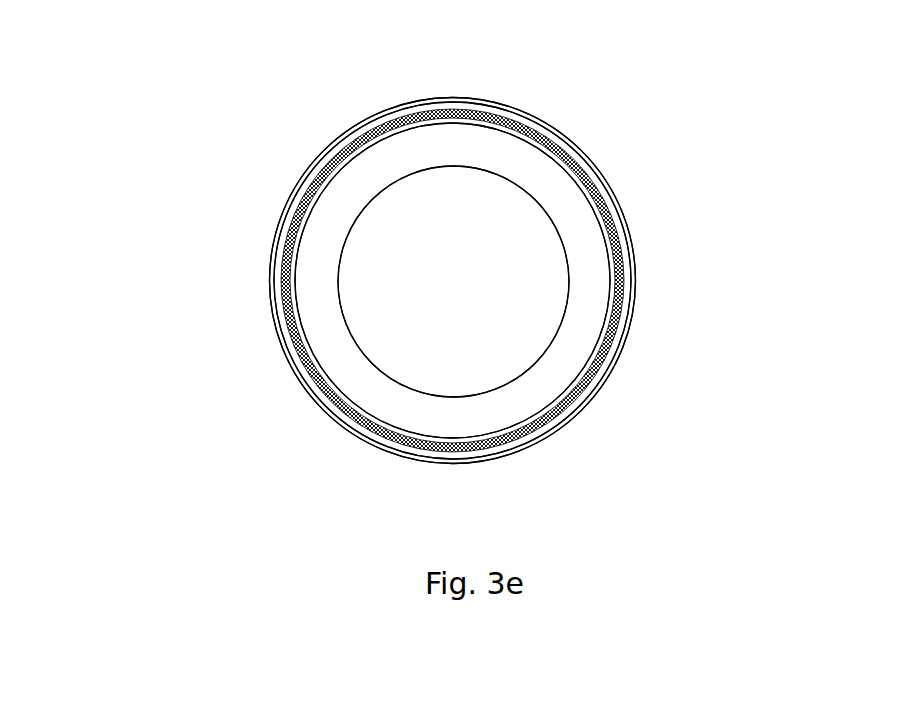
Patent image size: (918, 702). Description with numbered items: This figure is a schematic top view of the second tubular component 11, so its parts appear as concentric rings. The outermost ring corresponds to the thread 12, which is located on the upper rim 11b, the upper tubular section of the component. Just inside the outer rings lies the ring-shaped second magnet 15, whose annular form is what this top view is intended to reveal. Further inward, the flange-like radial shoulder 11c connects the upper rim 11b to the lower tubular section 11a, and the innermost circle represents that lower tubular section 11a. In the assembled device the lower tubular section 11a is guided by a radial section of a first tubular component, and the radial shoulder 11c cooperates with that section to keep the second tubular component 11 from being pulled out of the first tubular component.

The second tubular component 11 is at (190, 153).
The lower tubular section 11a is at (537, 198).
The upper rim 11b is at (628, 227).
The radial shoulder 11c is at (588, 271).
The thread 12 is at (340, 135).
The second magnet 15 is at (288, 215).